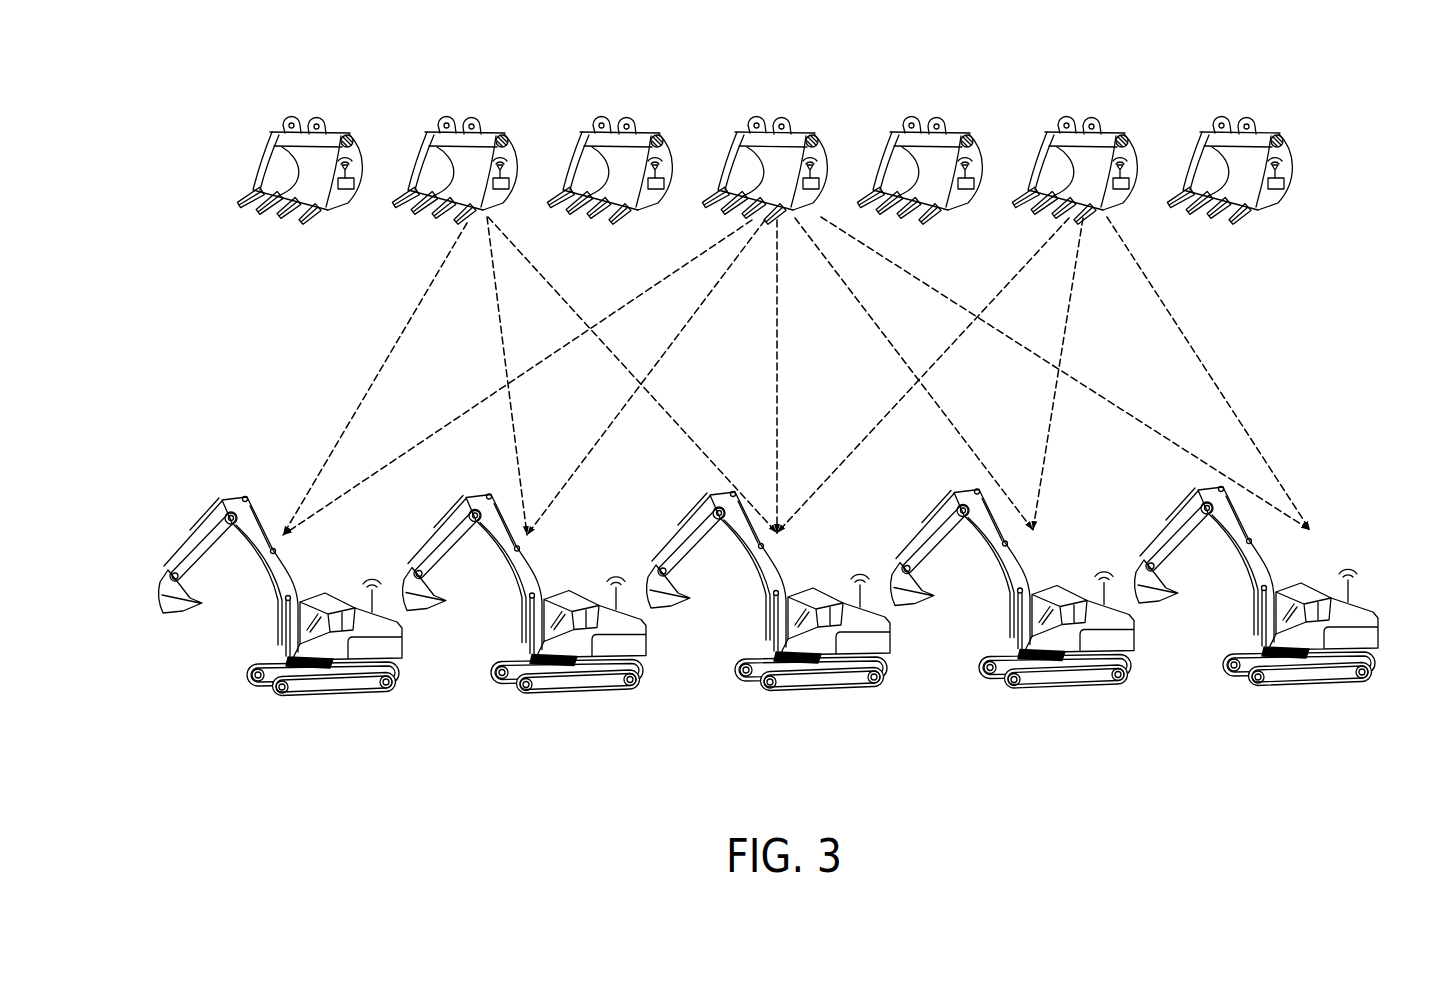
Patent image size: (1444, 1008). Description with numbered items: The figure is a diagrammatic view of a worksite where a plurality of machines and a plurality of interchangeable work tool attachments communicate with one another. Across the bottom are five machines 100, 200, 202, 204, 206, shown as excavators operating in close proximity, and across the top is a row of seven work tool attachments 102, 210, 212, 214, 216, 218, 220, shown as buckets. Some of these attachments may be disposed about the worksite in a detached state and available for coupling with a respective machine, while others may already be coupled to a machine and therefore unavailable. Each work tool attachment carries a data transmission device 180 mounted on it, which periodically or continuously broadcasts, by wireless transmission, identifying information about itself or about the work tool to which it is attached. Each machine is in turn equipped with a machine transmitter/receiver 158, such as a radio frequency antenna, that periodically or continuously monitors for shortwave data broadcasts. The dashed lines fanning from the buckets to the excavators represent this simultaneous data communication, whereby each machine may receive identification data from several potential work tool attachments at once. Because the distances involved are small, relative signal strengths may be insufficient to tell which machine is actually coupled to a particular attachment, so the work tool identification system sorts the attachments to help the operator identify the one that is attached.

The machine 100 is at (182, 675).
The work tool attachment 102 is at (301, 137).
The machine transmitter/receiver 158 is at (363, 600).
The data transmission device 180 is at (827, 147).
The machine 200 is at (505, 703).
The machine 202 is at (812, 703).
The machine 204 is at (1028, 703).
The machine 206 is at (1290, 705).
The work tool attachment 210 is at (455, 137).
The work tool attachment 212 is at (610, 137).
The work tool attachment 214 is at (764, 137).
The work tool attachment 216 is at (919, 137).
The work tool attachment 218 is at (1074, 137).
The work tool attachment 220 is at (1229, 137).